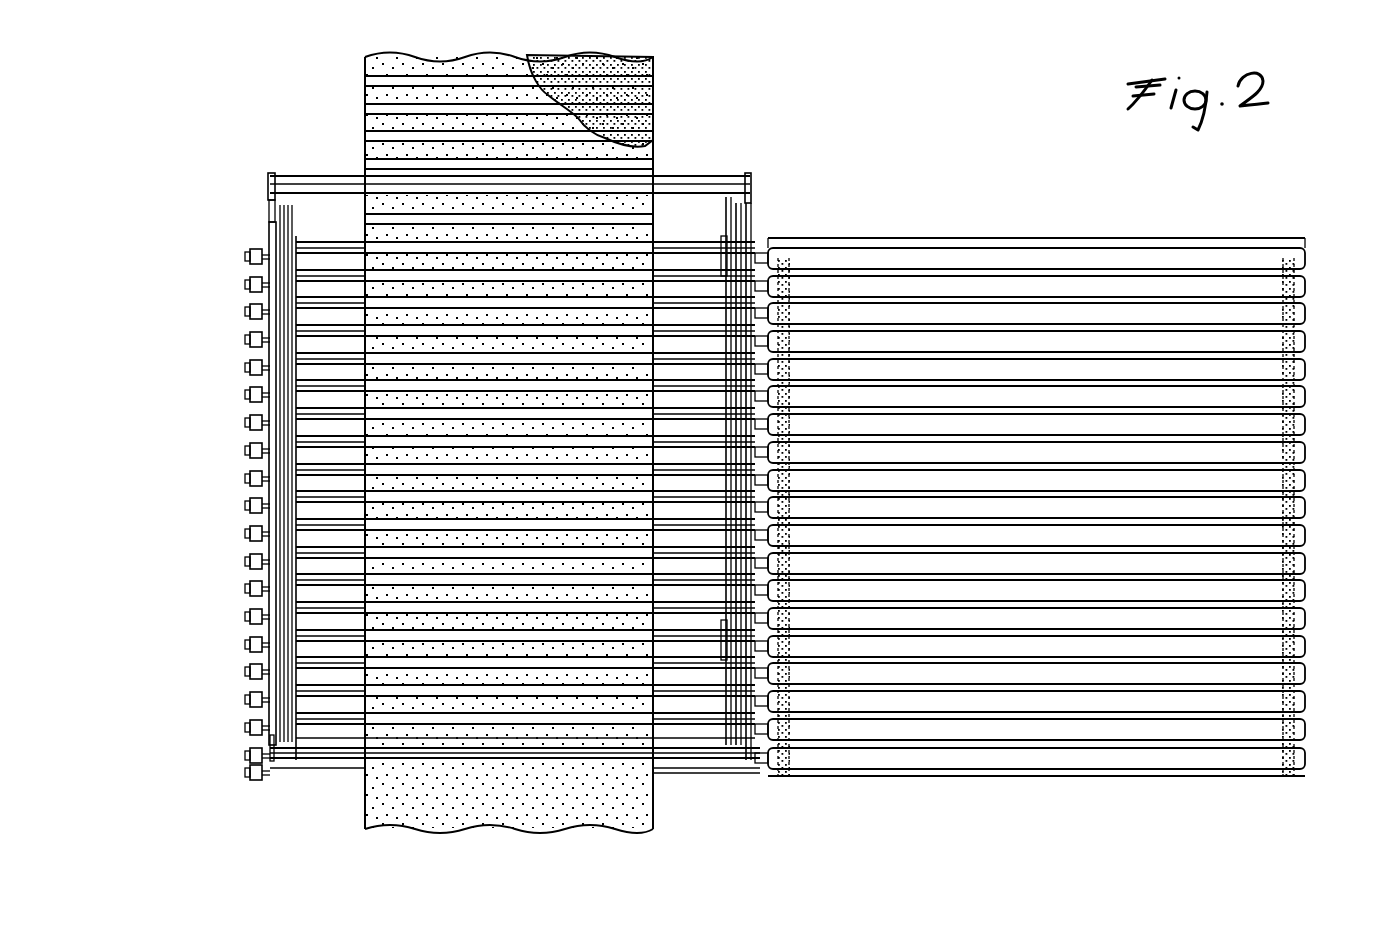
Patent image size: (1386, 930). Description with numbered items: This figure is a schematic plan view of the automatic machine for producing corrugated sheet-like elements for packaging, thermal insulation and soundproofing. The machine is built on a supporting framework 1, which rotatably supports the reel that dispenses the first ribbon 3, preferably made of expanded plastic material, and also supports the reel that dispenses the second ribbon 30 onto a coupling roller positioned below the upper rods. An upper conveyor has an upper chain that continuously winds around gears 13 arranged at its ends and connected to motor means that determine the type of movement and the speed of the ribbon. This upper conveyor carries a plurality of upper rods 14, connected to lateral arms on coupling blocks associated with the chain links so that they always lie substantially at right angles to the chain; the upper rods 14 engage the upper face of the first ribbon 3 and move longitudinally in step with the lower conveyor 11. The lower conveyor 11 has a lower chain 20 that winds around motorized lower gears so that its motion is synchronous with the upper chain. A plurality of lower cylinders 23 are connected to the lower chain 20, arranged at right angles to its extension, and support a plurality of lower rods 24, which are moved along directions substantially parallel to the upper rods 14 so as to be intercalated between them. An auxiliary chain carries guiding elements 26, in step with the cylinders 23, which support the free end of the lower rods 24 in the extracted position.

The supporting framework 1 is at (988, 156).
The first ribbon 3 is at (618, 158).
The second ribbon 30 is at (655, 112).
The upper rods 14 is at (398, 278).
The gears 13 is at (270, 235).
The guiding elements 26 is at (247, 285).
The lower rods 24 is at (760, 243).
The lower conveyor 11 is at (1053, 499).
The lower cylinders 23 is at (1090, 258).
The lower chain 20 is at (1300, 272).